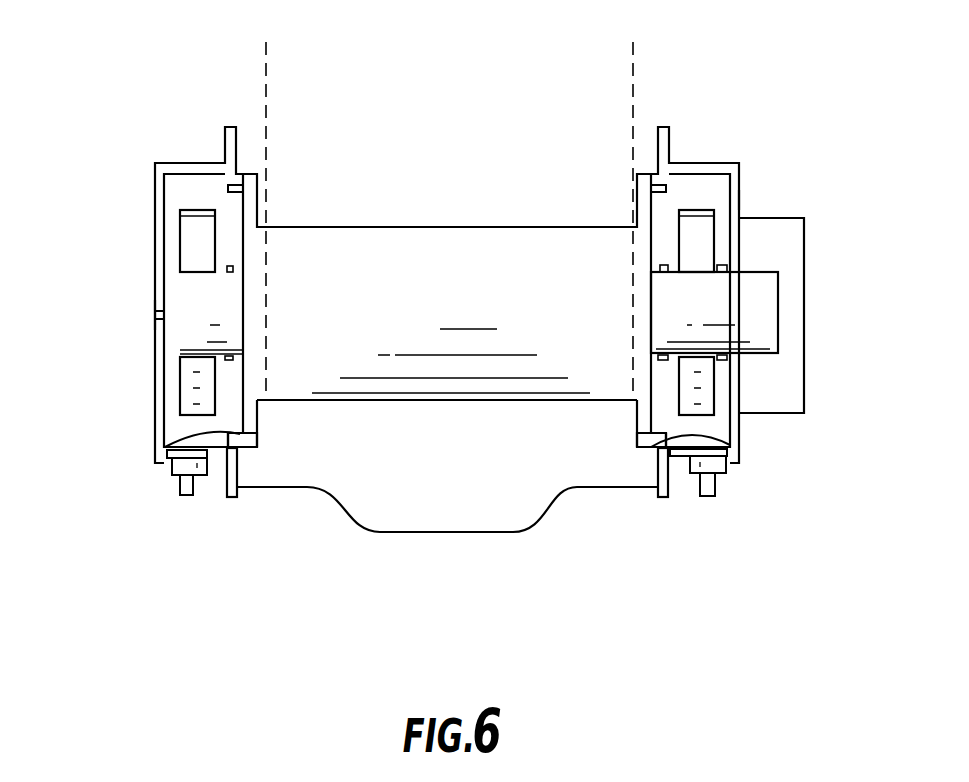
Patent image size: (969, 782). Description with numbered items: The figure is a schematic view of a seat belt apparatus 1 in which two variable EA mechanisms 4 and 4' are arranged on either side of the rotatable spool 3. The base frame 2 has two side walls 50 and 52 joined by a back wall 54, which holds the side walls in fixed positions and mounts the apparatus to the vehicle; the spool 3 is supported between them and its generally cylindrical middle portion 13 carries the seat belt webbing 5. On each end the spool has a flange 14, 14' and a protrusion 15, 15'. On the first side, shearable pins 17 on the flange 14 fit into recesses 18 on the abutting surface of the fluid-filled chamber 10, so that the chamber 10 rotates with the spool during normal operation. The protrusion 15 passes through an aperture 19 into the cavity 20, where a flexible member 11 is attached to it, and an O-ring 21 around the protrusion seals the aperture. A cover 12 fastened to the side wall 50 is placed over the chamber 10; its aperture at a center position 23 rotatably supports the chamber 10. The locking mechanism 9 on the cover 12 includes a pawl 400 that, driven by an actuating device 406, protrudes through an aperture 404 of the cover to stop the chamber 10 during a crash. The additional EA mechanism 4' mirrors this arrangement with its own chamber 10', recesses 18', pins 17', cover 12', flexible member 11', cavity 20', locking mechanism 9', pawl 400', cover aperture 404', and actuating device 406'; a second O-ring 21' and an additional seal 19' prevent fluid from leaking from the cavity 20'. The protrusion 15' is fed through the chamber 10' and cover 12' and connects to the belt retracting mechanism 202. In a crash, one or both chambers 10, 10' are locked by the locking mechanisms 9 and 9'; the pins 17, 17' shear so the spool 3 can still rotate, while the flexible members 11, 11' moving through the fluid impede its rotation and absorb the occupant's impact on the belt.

The seat belt apparatus 1 is at (490, 131).
The base frame 2 is at (412, 532).
The rotatable spool 3 is at (478, 227).
The variable EA mechanism 4 is at (177, 362).
The additional EA mechanism 4' is at (730, 346).
The seat belt webbing 5 is at (278, 98).
The locking mechanism 9 is at (244, 549).
The locking mechanism 9' is at (635, 530).
The chamber 10 is at (144, 295).
The chamber 10' is at (738, 295).
The flexible member 11 is at (132, 230).
The flexible member 11' is at (640, 213).
The cover 12 is at (98, 295).
The cover 12' is at (794, 170).
The middle portion 13 is at (500, 402).
The flange 14 is at (270, 445).
The flange 14' is at (619, 448).
The protrusion 15 is at (170, 353).
The protrusion 15' is at (757, 312).
The shearable pins 17 is at (166, 455).
The shearable pins 17' is at (734, 456).
The recesses 18 is at (288, 136).
The recesses 18' is at (728, 151).
The aperture 19 is at (150, 249).
The additional seal 19' is at (771, 333).
The cavity 20 is at (126, 386).
The cavity 20' is at (696, 386).
The O-ring 21 is at (275, 370).
The spacer 21' is at (650, 370).
The center position 23 is at (153, 313).
The side wall 50 is at (233, 497).
The side wall 52 is at (657, 500).
The back wall 54 is at (453, 523).
The belt retracting mechanism 202 is at (787, 267).
The pawl 400 is at (142, 527).
The connector body 400' is at (742, 518).
The aperture 404 is at (141, 500).
The mounting plate 404' is at (759, 504).
The actuating device 406 is at (218, 559).
The plug 406' is at (669, 527).